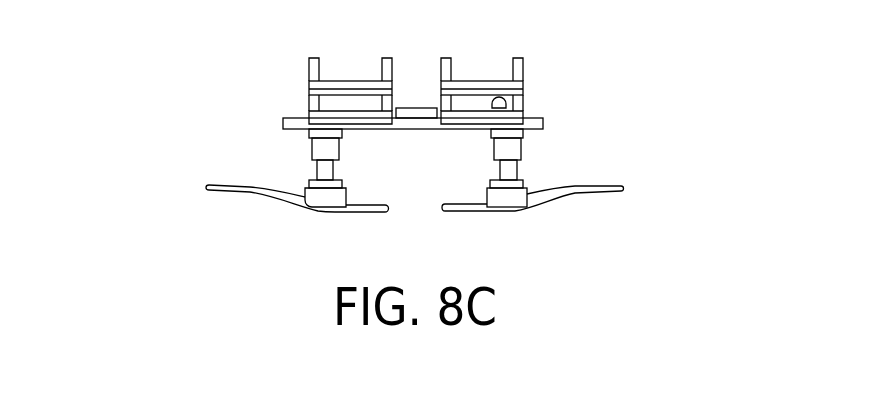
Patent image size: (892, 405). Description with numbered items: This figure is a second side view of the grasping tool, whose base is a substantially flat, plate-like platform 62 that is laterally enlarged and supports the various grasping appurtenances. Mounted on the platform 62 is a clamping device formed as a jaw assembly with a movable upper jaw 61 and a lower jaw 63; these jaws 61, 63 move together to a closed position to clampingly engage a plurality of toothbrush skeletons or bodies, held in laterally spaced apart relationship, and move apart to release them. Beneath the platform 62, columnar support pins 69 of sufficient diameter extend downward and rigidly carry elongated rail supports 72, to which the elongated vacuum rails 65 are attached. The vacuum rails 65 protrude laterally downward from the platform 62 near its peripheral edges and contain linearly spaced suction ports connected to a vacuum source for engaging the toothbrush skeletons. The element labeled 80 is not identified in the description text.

The upper jaw 61 is at (527, 88).
The platform 62 is at (293, 118).
The lower jaw 63 is at (527, 112).
The columnar support pin 69 is at (310, 148).
The rail support 72 is at (524, 185).
The vacuum rail 65 is at (513, 197).
The blade 80 is at (567, 197).